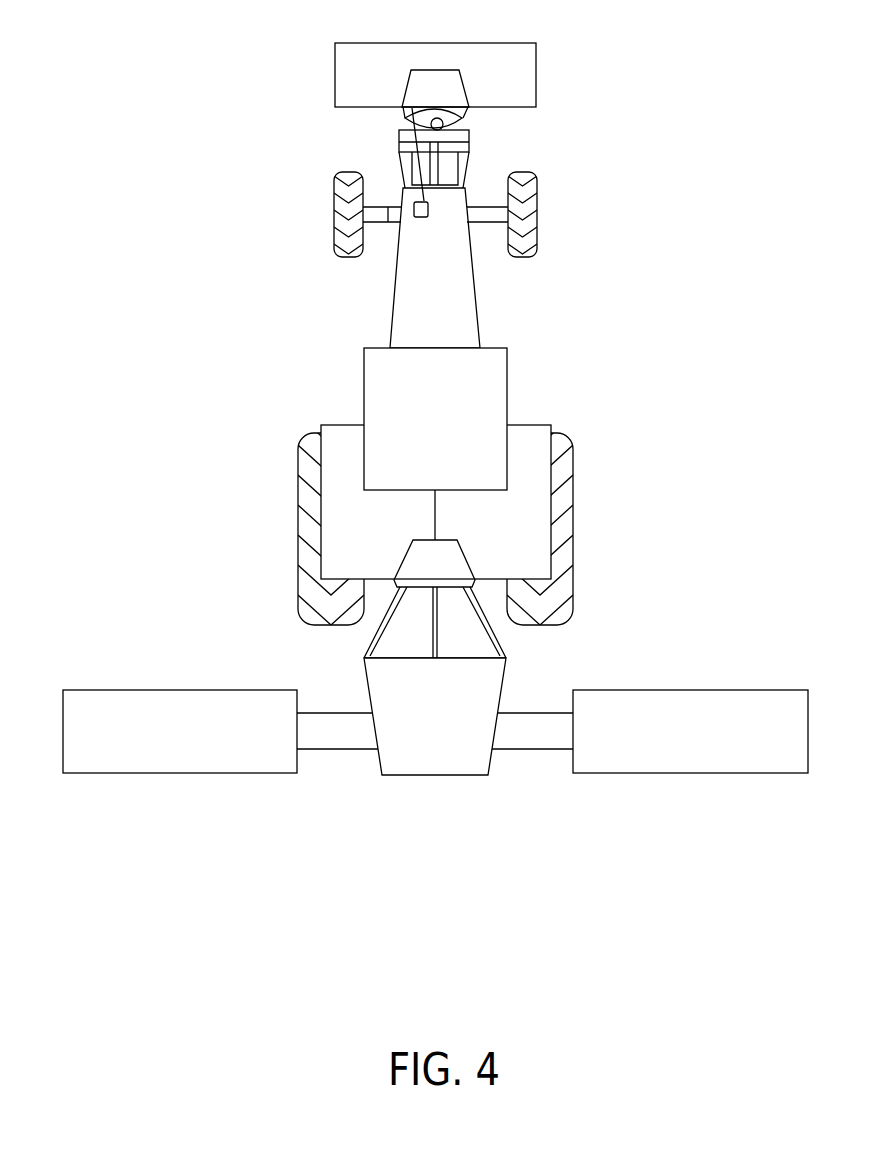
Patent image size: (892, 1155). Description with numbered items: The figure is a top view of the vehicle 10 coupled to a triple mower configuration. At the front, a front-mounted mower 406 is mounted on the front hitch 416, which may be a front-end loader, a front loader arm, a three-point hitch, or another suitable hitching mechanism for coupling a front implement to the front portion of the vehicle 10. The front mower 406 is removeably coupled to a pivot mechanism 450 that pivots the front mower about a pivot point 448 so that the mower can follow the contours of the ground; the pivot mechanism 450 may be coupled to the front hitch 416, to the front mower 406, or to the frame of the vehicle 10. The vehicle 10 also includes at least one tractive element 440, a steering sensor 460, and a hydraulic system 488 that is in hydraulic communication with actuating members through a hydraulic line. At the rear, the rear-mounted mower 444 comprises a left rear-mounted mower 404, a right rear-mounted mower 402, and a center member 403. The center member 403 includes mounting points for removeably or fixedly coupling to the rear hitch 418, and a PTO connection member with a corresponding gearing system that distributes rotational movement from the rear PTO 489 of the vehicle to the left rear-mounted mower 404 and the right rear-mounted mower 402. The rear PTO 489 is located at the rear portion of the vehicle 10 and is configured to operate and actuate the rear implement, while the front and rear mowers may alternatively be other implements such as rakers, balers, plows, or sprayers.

The vehicle 10 is at (682, 287).
The front-mounted mower 406 is at (435, 43).
The pivot point 448 is at (455, 117).
The pivot mechanism 450 is at (370, 115).
The front hitch 416 is at (472, 173).
The tractive element 440 is at (337, 217).
The steering sensor 460 is at (395, 223).
The hydraulic system 488 is at (428, 217).
The rear PTO 489 is at (345, 643).
The rear hitch 418 is at (498, 637).
The rear-mounted mower 444 is at (445, 860).
The center member 403 is at (463, 776).
The left rear-mounted mower 404 is at (168, 797).
The right rear-mounted mower 402 is at (722, 798).